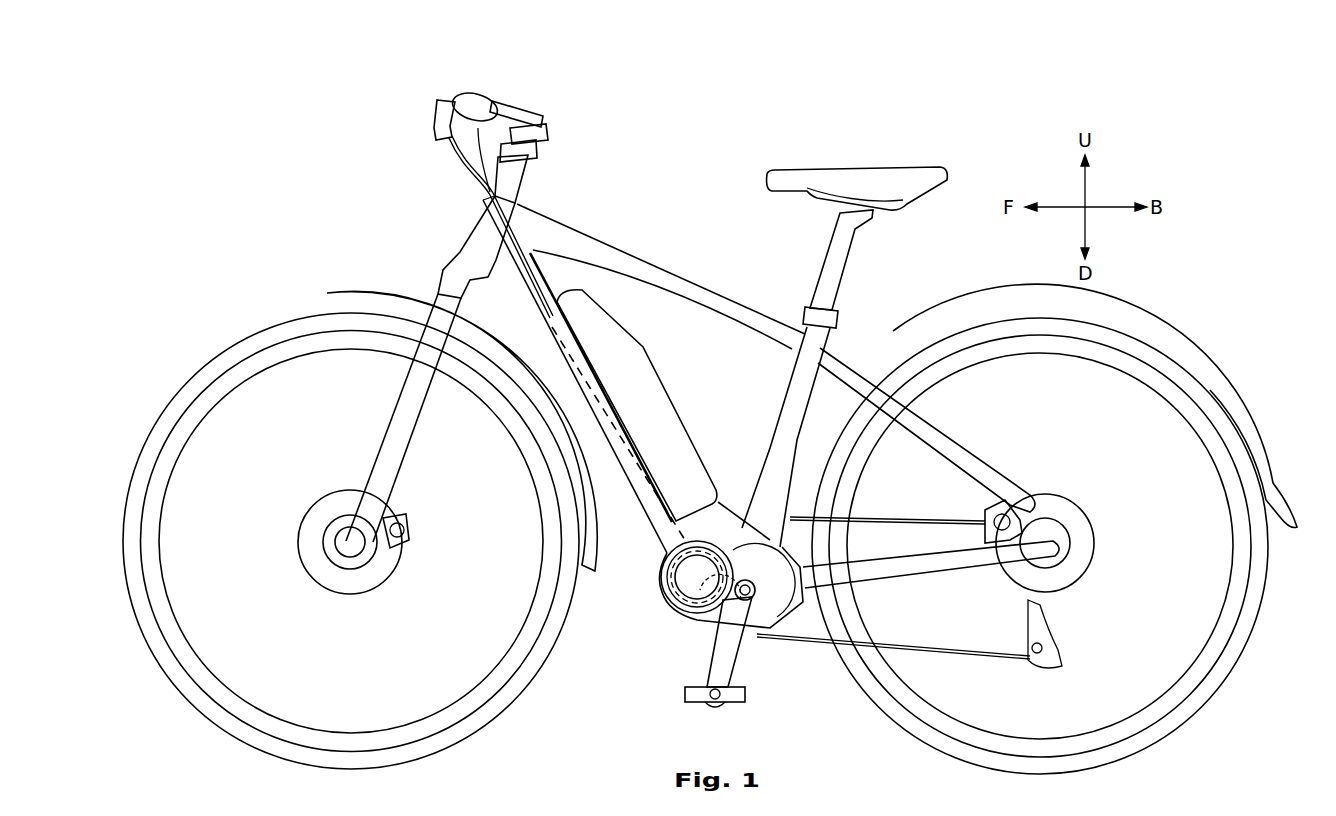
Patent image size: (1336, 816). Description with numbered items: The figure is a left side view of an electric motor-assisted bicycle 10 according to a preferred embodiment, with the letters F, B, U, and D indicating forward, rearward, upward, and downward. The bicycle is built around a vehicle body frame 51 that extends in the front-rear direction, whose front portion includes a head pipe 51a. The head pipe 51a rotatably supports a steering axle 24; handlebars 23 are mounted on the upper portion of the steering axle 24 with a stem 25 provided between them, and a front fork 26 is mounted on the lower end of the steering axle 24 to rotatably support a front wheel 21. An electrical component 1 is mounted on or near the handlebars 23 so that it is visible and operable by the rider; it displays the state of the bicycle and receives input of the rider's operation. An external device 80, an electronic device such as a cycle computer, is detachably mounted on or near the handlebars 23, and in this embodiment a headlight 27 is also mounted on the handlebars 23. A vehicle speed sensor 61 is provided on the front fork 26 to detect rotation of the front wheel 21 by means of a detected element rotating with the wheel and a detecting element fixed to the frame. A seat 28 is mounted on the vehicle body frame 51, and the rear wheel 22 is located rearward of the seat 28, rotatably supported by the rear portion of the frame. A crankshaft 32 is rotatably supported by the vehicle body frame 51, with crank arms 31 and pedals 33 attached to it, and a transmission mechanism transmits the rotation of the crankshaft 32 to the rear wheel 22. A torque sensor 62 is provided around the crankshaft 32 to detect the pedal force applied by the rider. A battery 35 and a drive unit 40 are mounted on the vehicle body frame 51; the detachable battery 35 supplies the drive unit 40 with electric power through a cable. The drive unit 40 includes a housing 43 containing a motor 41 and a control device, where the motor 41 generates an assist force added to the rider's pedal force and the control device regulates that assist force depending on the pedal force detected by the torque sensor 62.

The electrical component 1 is at (548, 133).
The electric motor-assisted bicycle 10 is at (722, 130).
The front wheel 21 is at (263, 338).
The rear wheel 22 is at (1150, 352).
The handlebars 23 is at (478, 95).
The steering axle 24 is at (522, 186).
The stem 25 is at (540, 152).
The front fork 26 is at (409, 440).
The headlight 27 is at (437, 110).
The seat 28 is at (860, 180).
The crank arms 31 is at (735, 633).
The crankshaft 32 is at (757, 606).
The pedals 33 is at (728, 697).
The battery 35 is at (688, 448).
The drive unit 40 is at (666, 623).
The motor 41 is at (663, 577).
The housing 43 is at (660, 562).
The vehicle body frame 51 is at (672, 283).
The head pipe 51a is at (470, 238).
The vehicle speed sensor 61 is at (325, 497).
The torque sensor 62 is at (723, 600).
The external device 80 is at (520, 100).